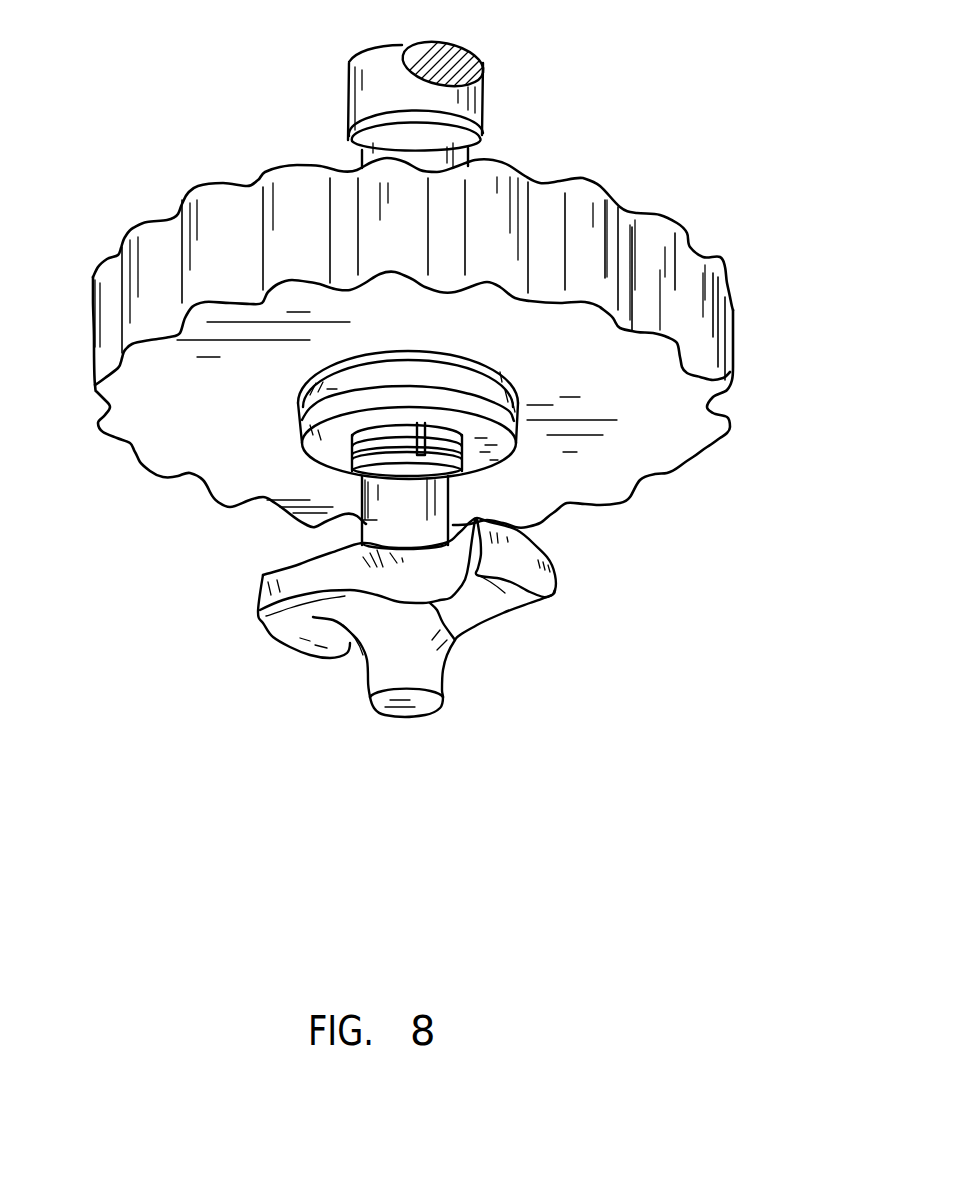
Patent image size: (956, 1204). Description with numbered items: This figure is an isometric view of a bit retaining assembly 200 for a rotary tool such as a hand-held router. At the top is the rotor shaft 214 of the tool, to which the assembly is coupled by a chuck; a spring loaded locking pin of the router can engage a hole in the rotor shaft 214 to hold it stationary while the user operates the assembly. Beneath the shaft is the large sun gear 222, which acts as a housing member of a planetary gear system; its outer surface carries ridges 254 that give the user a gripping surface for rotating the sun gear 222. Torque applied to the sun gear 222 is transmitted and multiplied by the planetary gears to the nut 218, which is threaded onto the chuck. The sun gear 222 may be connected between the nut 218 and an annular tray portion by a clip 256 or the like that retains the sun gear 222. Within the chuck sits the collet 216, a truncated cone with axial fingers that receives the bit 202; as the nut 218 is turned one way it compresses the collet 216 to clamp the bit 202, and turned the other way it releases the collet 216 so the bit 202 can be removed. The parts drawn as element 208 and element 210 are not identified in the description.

The bit retaining assembly 200 is at (607, 455).
The bit 202 is at (447, 687).
The handle 208 is at (518, 585).
The shaft 210 is at (362, 520).
The rotor shaft 214 is at (430, 150).
The collet 216 is at (355, 474).
The nut 218 is at (298, 397).
The sun gear 222 is at (677, 415).
The ridges 254 is at (703, 285).
The clip 256 is at (325, 365).